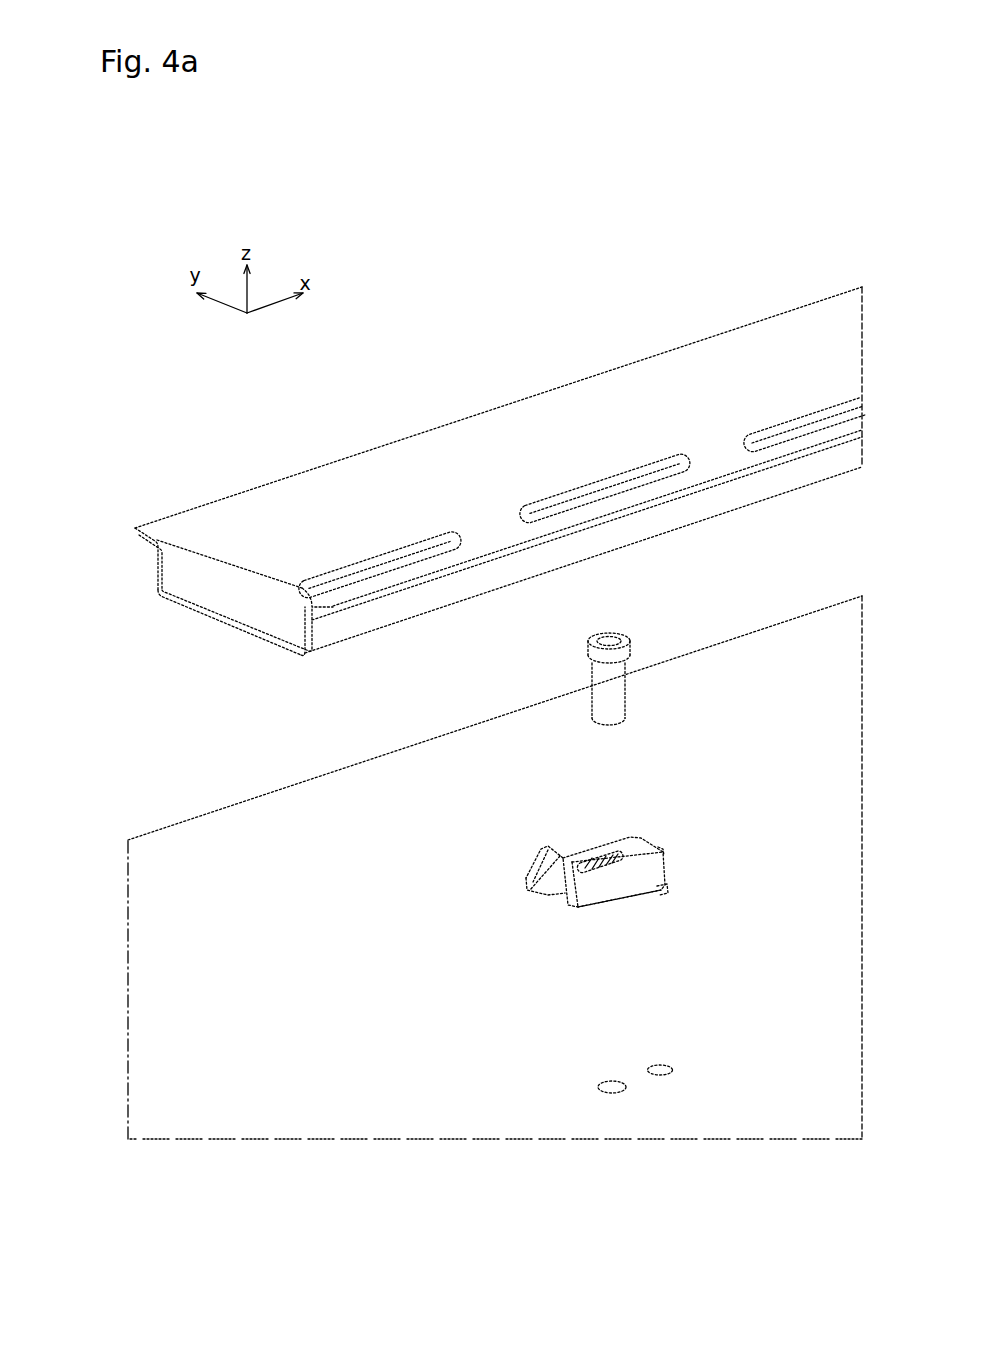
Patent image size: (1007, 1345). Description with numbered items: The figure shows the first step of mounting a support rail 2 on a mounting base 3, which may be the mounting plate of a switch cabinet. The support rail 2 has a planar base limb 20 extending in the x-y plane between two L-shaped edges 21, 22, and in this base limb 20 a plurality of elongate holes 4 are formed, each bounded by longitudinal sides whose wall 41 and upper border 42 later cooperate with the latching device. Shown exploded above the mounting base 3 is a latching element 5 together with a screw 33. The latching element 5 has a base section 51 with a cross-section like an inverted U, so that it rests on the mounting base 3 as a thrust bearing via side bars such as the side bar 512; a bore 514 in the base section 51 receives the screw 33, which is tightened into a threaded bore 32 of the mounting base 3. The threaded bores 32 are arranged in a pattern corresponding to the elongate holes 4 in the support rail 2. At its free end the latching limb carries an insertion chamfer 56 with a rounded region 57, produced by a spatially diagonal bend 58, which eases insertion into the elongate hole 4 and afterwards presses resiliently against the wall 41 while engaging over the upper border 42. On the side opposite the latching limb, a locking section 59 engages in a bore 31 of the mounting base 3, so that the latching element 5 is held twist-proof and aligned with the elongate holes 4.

The support rail 2 is at (660, 382).
The base limb 20 is at (222, 618).
The edge 21 is at (157, 562).
The edge 22 is at (314, 630).
The elongate hole 4 is at (425, 555).
The wall 41 is at (328, 578).
The upper border 42 is at (363, 563).
The mounting base 3 is at (236, 1112).
The bore 31 is at (660, 1072).
The threaded bore 32 is at (612, 1088).
The screw 33 is at (618, 652).
The latching element 5 is at (643, 848).
The base section 51 is at (632, 877).
The side bar 512 is at (619, 898).
The bore 514 is at (608, 848).
The insertion chamfer 56 is at (540, 860).
The rounded region 57 is at (542, 850).
The spatially diagonal bend 58 is at (547, 882).
The locking section 59 is at (662, 887).